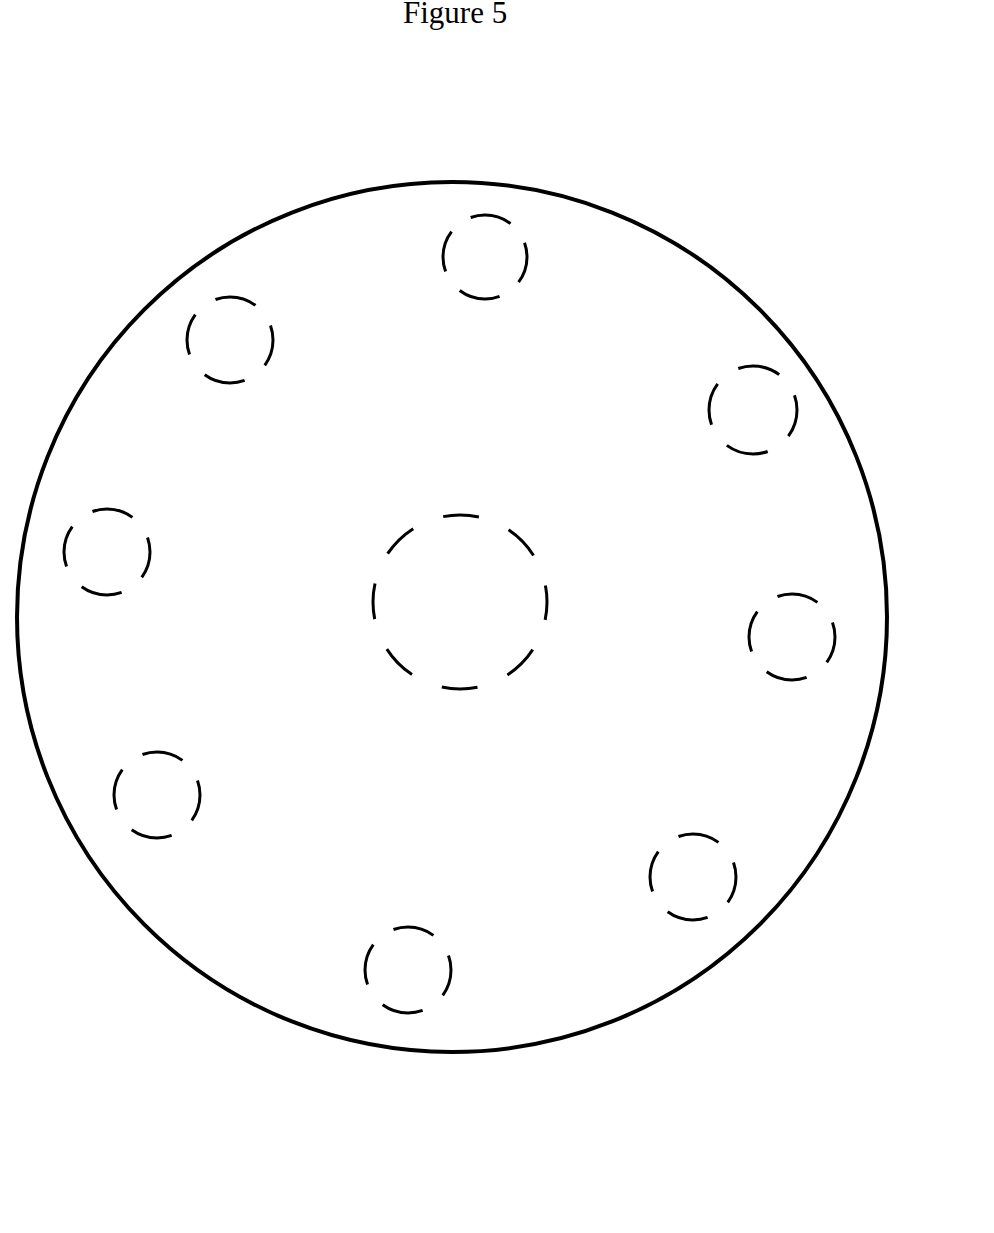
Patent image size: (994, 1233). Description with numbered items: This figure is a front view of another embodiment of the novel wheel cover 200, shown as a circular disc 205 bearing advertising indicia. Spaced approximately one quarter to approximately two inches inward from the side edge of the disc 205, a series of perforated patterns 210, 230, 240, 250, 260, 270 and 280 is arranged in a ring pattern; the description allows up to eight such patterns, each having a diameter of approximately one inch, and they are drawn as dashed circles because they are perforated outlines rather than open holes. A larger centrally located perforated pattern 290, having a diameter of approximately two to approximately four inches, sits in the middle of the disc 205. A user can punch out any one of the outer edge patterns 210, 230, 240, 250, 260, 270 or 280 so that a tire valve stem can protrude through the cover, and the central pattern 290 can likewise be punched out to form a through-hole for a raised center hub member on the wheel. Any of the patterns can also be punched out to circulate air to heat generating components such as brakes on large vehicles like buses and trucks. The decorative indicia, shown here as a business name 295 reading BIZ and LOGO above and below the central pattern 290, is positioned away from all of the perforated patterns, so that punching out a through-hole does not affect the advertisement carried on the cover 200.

The decorative item / coaster (dashed position indicator) 200 is at (258, 189).
The disc 205 is at (650, 253).
The perforated pattern 210 is at (508, 218).
The perforated pattern 230 is at (132, 520).
The perforated pattern 240 is at (183, 762).
The perforated pattern 250 is at (433, 935).
The perforated pattern 260 is at (708, 833).
The perforated pattern 270 is at (765, 668).
The perforated pattern 280 is at (727, 443).
The centrally located perforated pattern 290 is at (548, 585).
The business name 295 is at (533, 403).